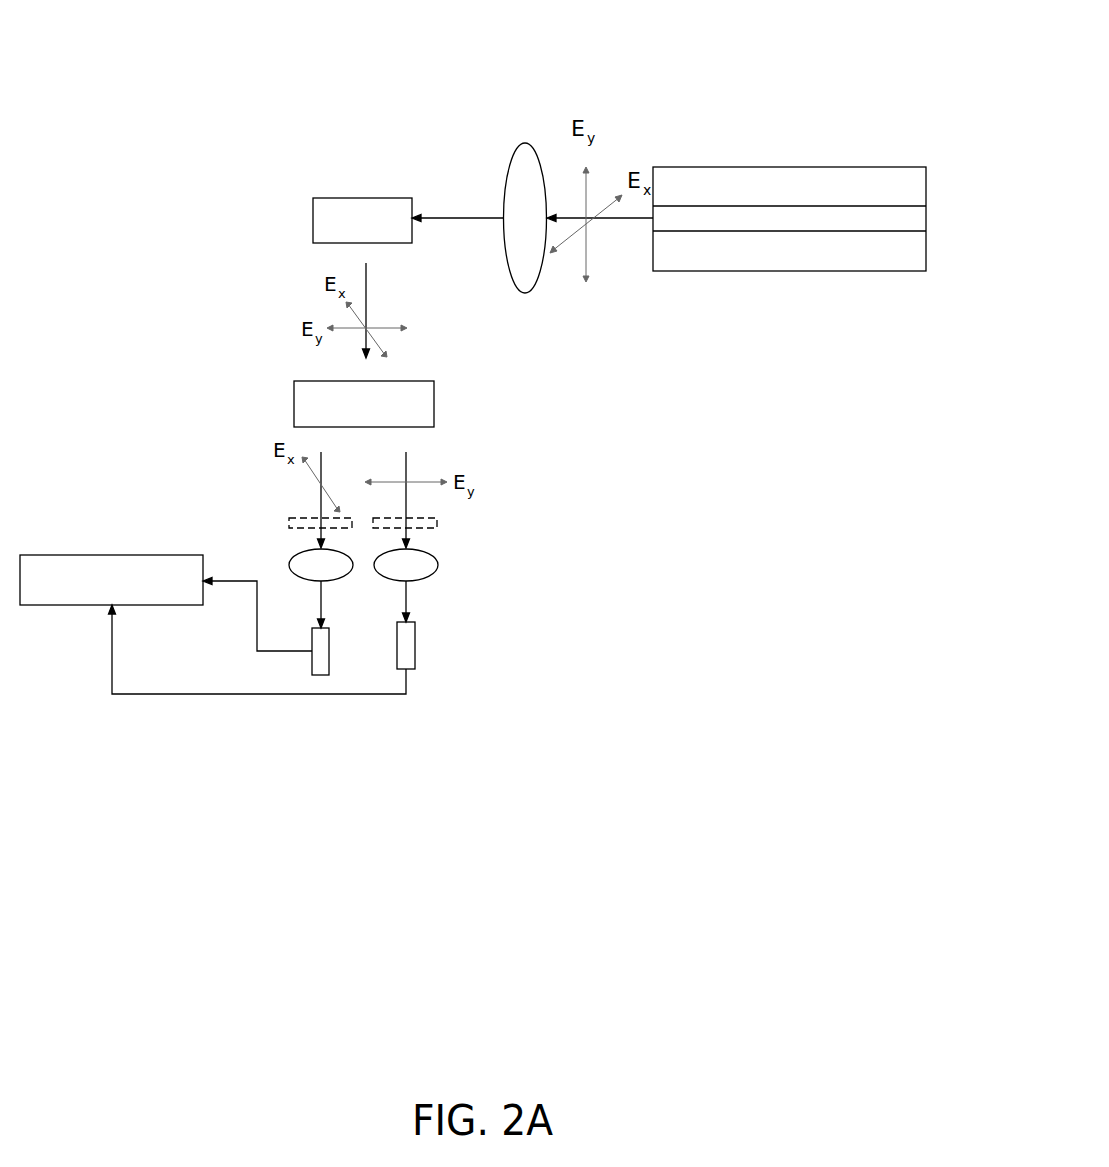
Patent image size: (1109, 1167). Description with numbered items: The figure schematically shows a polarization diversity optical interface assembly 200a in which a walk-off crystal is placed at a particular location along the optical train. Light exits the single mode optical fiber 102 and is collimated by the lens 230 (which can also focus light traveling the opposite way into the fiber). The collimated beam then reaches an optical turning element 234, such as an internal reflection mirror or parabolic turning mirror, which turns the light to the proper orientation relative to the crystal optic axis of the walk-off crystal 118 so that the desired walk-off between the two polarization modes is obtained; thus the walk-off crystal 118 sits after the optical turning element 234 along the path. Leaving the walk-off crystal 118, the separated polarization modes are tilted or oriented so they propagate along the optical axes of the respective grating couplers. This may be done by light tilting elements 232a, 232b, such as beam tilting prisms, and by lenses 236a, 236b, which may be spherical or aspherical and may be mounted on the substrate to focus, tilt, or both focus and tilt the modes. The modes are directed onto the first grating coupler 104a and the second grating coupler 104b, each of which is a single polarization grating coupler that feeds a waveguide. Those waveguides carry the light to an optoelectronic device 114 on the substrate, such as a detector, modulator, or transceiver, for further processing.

The polarization diversity optical interface assembly 200a is at (206, 62).
The single mode optical fiber 102 is at (720, 170).
The lens 230 is at (520, 140).
The optical turning element 234 is at (314, 200).
The walk-off crystal 118 is at (308, 390).
The first light tilting element 232a is at (308, 513).
The second light tilting element 232b is at (418, 513).
The first lens 236a is at (305, 550).
The second lens 236b is at (438, 568).
The first grating coupler 104a is at (308, 663).
The second grating coupler 104b is at (402, 645).
The optoelectronic device 114 is at (51, 605).